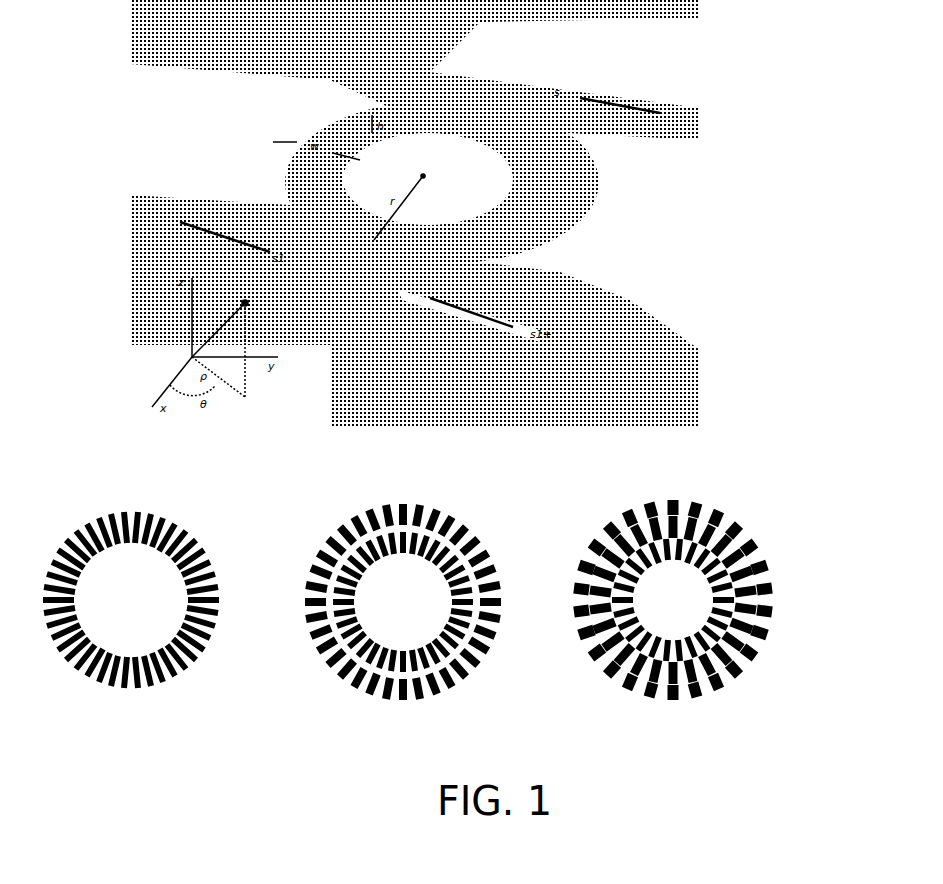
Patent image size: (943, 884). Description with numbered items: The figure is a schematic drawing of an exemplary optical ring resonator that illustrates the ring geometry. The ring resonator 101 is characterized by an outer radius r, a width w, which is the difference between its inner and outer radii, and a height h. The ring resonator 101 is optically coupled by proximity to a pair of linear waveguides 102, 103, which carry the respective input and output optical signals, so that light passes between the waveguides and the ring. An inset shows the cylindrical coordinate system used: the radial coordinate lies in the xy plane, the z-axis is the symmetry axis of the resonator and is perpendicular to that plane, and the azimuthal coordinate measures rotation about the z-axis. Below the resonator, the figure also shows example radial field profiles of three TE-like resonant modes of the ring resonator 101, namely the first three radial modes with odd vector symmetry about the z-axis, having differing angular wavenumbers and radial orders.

The ring resonator 101 is at (295, 190).
The linear waveguide 102 is at (705, 408).
The linear waveguide 103 is at (695, 133).